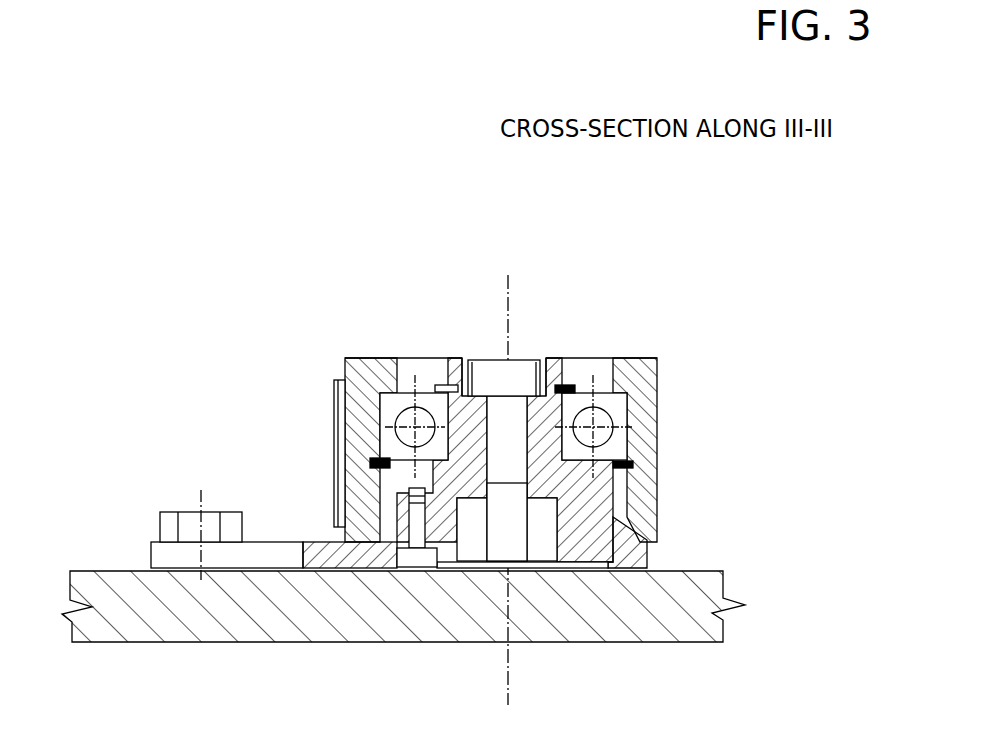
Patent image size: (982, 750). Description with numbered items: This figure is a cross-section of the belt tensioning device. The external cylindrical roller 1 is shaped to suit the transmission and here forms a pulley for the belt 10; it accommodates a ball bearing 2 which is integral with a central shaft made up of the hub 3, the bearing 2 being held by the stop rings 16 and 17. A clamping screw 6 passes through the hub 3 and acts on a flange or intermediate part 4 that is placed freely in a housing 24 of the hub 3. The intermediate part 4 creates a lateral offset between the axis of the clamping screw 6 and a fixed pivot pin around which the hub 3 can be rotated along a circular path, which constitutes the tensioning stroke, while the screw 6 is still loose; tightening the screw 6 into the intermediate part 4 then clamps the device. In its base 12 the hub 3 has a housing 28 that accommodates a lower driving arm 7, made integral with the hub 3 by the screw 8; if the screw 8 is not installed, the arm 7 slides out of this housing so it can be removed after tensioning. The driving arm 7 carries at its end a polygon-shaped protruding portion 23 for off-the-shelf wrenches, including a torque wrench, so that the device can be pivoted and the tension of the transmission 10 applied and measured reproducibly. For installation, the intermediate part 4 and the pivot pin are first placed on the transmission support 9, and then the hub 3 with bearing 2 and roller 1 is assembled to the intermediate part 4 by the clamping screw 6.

The external cylindrical roller 1 is at (365, 385).
The ball bearing 2 is at (412, 422).
The hub 3 is at (466, 395).
The intermediate part 4 is at (536, 528).
The clamping screw 6 is at (497, 530).
The lower driving arm 7 is at (240, 557).
The screw 8 is at (417, 558).
The transmission support 9 is at (340, 615).
The belt 10 is at (340, 418).
The base 12 is at (655, 557).
The stop ring 16 is at (634, 461).
The stop ring 17 is at (575, 384).
The polygon-shaped protruding portion 23 is at (208, 532).
The housing 24 is at (556, 550).
The housing 28 is at (388, 543).